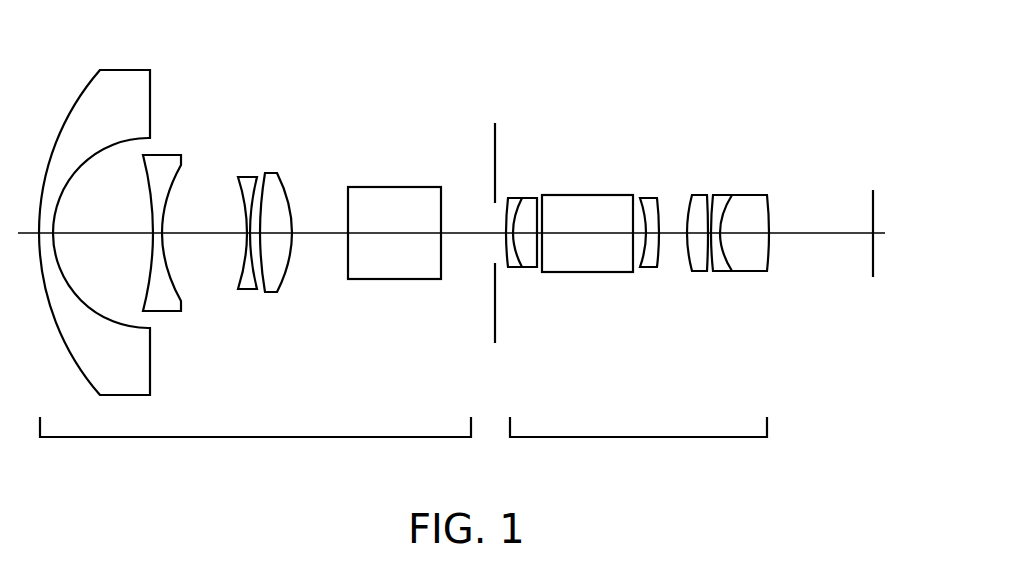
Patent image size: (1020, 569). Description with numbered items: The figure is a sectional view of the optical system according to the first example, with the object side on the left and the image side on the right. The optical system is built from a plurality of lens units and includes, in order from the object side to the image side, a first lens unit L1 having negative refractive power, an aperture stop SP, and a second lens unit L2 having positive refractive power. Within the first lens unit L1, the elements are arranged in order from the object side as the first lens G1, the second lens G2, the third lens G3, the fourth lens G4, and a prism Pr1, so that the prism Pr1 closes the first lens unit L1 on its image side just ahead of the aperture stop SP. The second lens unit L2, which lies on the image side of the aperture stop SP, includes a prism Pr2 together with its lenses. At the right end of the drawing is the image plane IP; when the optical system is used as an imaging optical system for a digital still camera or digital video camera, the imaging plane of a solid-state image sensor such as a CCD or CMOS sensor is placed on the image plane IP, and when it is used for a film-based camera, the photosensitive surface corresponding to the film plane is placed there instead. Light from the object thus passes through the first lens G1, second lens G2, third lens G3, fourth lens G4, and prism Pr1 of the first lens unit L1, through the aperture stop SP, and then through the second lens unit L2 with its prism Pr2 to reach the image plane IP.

The first lens G1 is at (158, 65).
The second lens G2 is at (183, 150).
The third lens G3 is at (245, 165).
The fourth lens G4 is at (277, 165).
The prism Pr1 is at (391, 173).
The aperture stop SP is at (507, 115).
The prism Pr2 is at (592, 173).
The image plane IP is at (875, 180).
The first lens unit L1 is at (255, 449).
The second lens unit L2 is at (638, 449).